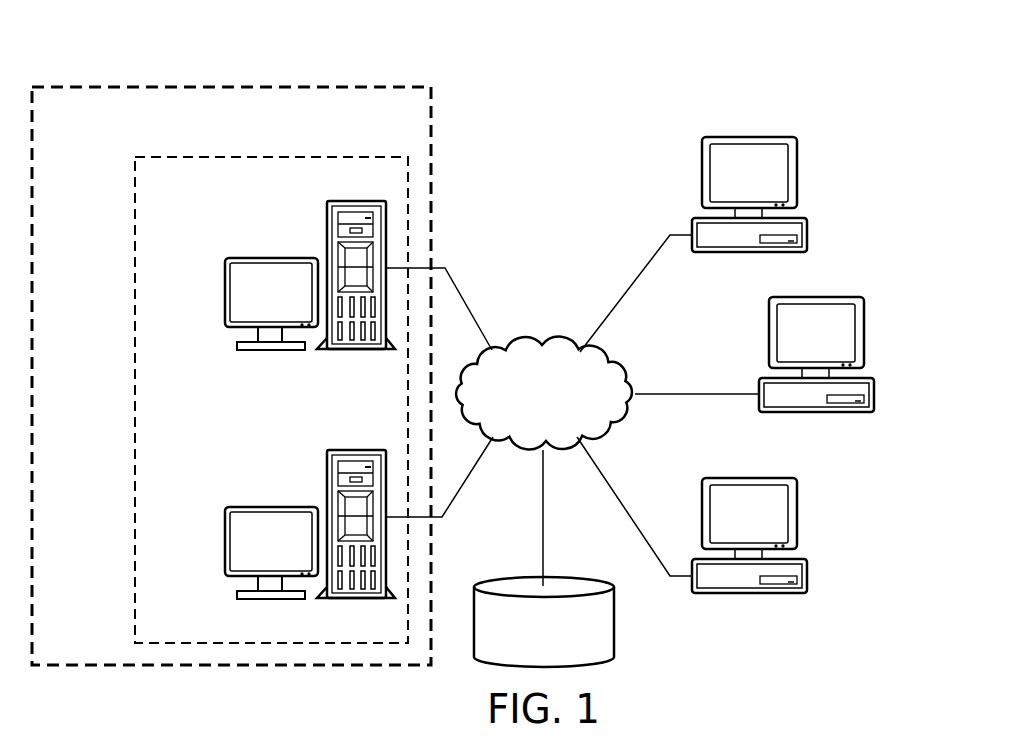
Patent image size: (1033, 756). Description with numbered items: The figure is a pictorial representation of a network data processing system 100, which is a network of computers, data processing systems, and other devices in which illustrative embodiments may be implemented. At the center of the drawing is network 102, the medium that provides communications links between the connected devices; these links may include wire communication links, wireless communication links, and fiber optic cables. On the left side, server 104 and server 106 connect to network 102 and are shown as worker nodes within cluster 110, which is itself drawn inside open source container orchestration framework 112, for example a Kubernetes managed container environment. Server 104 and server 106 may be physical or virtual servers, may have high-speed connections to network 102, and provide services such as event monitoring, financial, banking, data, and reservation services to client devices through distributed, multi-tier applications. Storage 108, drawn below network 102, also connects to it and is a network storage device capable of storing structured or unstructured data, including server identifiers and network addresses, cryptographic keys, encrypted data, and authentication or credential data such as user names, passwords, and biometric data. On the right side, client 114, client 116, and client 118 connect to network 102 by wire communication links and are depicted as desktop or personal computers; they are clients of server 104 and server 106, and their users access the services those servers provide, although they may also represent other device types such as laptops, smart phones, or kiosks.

The network data processing system 100 is at (706, 71).
The network 102 is at (518, 342).
The server 104 is at (225, 290).
The server 106 is at (225, 542).
The storage 108 is at (614, 622).
The cluster 110 is at (135, 402).
The open source container orchestration framework 112 is at (121, 87).
The client 114 is at (807, 225).
The client 116 is at (875, 405).
The client 118 is at (807, 585).